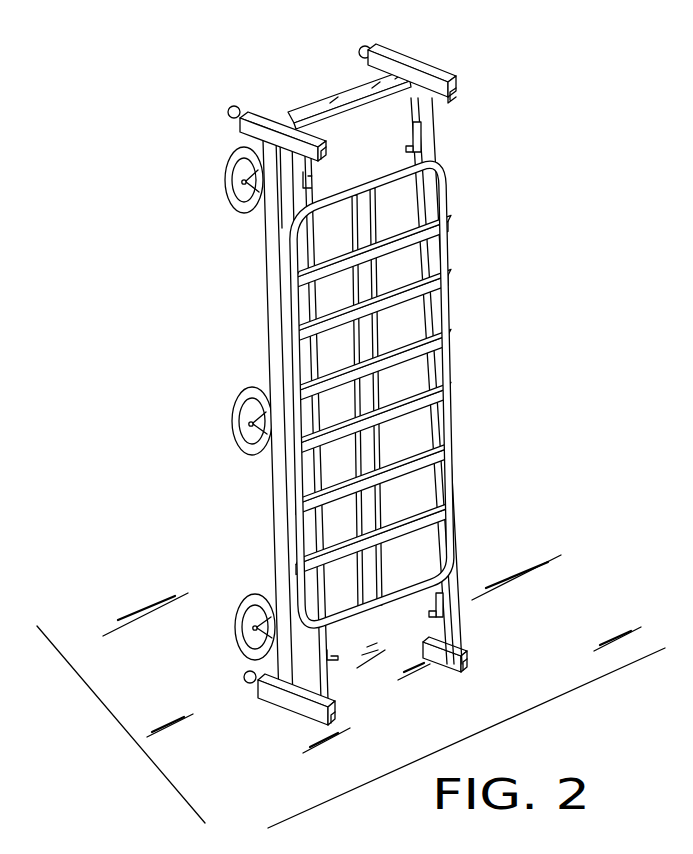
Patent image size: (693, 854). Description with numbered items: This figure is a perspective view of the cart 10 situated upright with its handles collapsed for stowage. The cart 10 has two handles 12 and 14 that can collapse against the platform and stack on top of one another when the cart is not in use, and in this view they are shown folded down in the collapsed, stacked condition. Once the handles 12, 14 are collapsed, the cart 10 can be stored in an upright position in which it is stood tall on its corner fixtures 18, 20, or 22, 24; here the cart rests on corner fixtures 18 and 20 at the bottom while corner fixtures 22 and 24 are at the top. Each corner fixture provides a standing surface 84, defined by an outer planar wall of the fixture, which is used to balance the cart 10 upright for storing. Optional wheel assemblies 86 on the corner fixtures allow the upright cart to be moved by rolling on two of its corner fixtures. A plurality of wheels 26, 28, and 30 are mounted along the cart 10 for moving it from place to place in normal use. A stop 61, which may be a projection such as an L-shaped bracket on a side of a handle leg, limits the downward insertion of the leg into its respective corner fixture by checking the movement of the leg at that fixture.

The cart 10 is at (355, 398).
The handle 12 is at (455, 383).
The handle 14 is at (282, 328).
The corner fixture 18 is at (470, 657).
The corner fixture 20 is at (297, 722).
The corner fixture 22 is at (237, 135).
The corner fixture 24 is at (446, 73).
The wheel 26 is at (231, 200).
The wheel 28 is at (232, 441).
The wheel 30 is at (231, 612).
The stop 61 is at (421, 138).
The standing surface 84 is at (276, 111).
The wheel assembly 86 is at (229, 112).